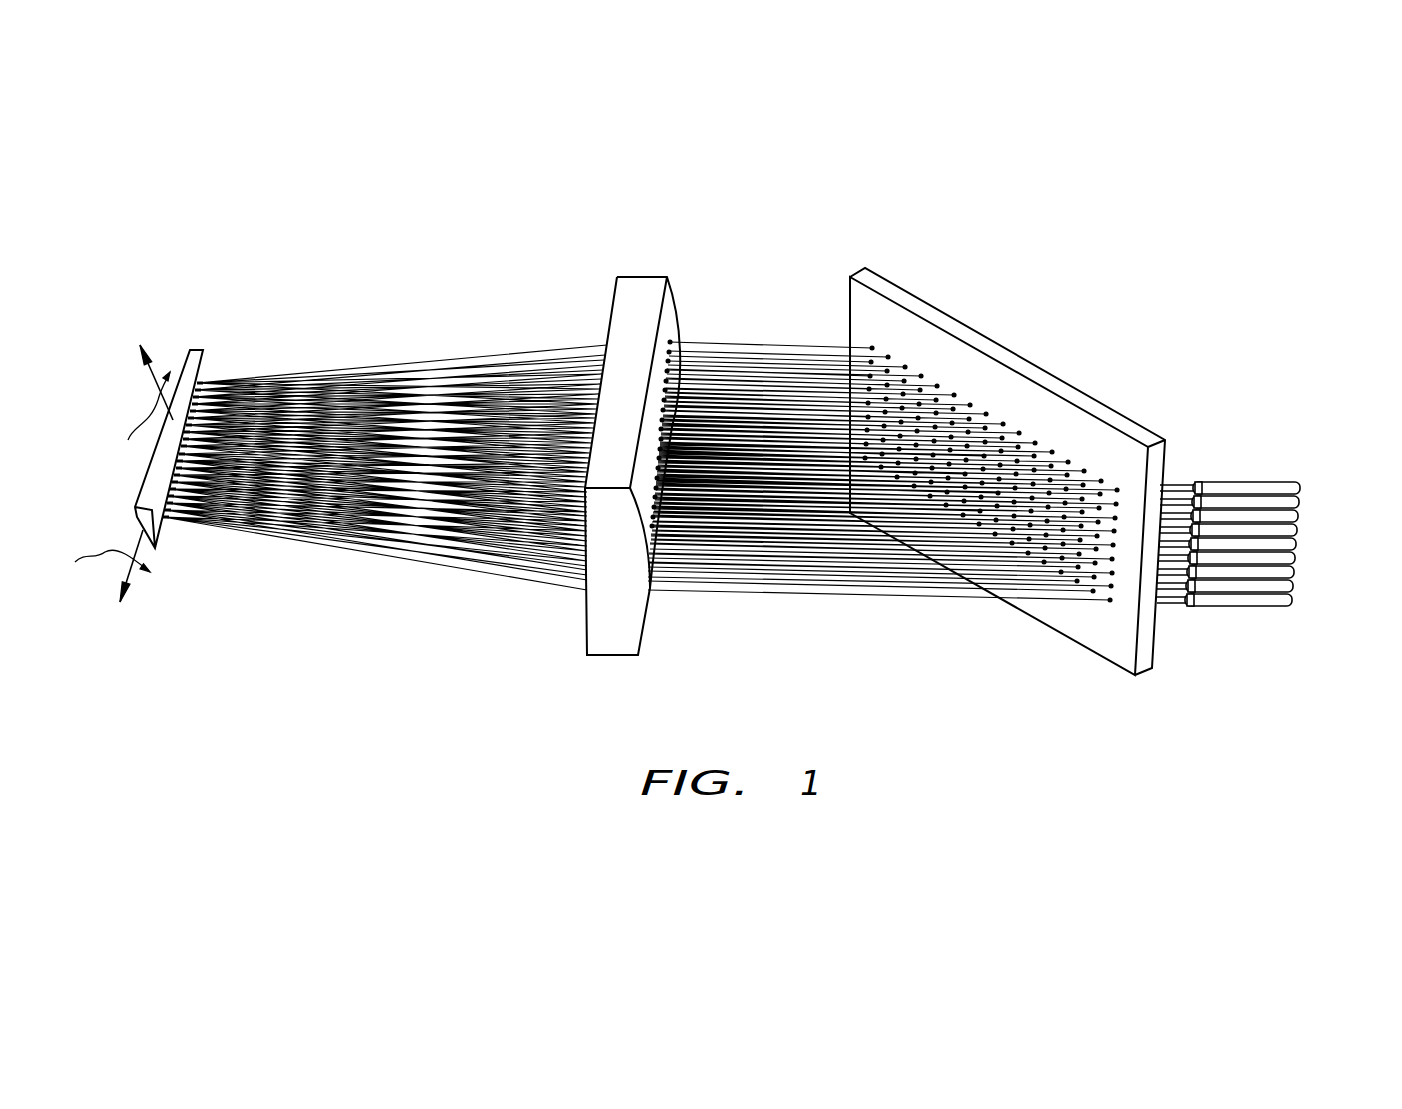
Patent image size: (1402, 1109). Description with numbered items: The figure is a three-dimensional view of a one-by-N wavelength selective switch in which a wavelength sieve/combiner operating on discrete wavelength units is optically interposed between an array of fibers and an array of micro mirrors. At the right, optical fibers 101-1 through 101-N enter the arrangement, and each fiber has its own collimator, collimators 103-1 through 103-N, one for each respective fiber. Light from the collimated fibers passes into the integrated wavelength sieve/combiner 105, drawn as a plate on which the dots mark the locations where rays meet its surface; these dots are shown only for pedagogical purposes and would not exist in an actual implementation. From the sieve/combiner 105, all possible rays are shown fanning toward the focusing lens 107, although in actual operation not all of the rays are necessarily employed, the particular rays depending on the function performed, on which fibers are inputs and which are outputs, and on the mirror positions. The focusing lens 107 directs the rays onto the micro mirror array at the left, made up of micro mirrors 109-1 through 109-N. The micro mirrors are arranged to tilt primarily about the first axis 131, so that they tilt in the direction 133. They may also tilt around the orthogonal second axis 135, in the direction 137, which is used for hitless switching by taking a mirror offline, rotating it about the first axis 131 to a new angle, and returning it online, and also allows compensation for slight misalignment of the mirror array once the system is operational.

The optical fiber 101-1 is at (1256, 482).
The optical fiber 101-N is at (1243, 608).
The collimator 103-1 is at (1207, 482).
The collimator 103-N is at (1192, 610).
The integrated wavelength sieve/combiner 105 is at (990, 340).
The focusing lens 107 is at (680, 313).
The micro mirror 109-1 is at (208, 380).
The micro mirror 109-N is at (167, 520).
The first axis 131 is at (121, 589).
The tilt direction about first axis 133 is at (86, 560).
The second axis 135 is at (155, 393).
The tilt direction about second axis 137 is at (124, 415).